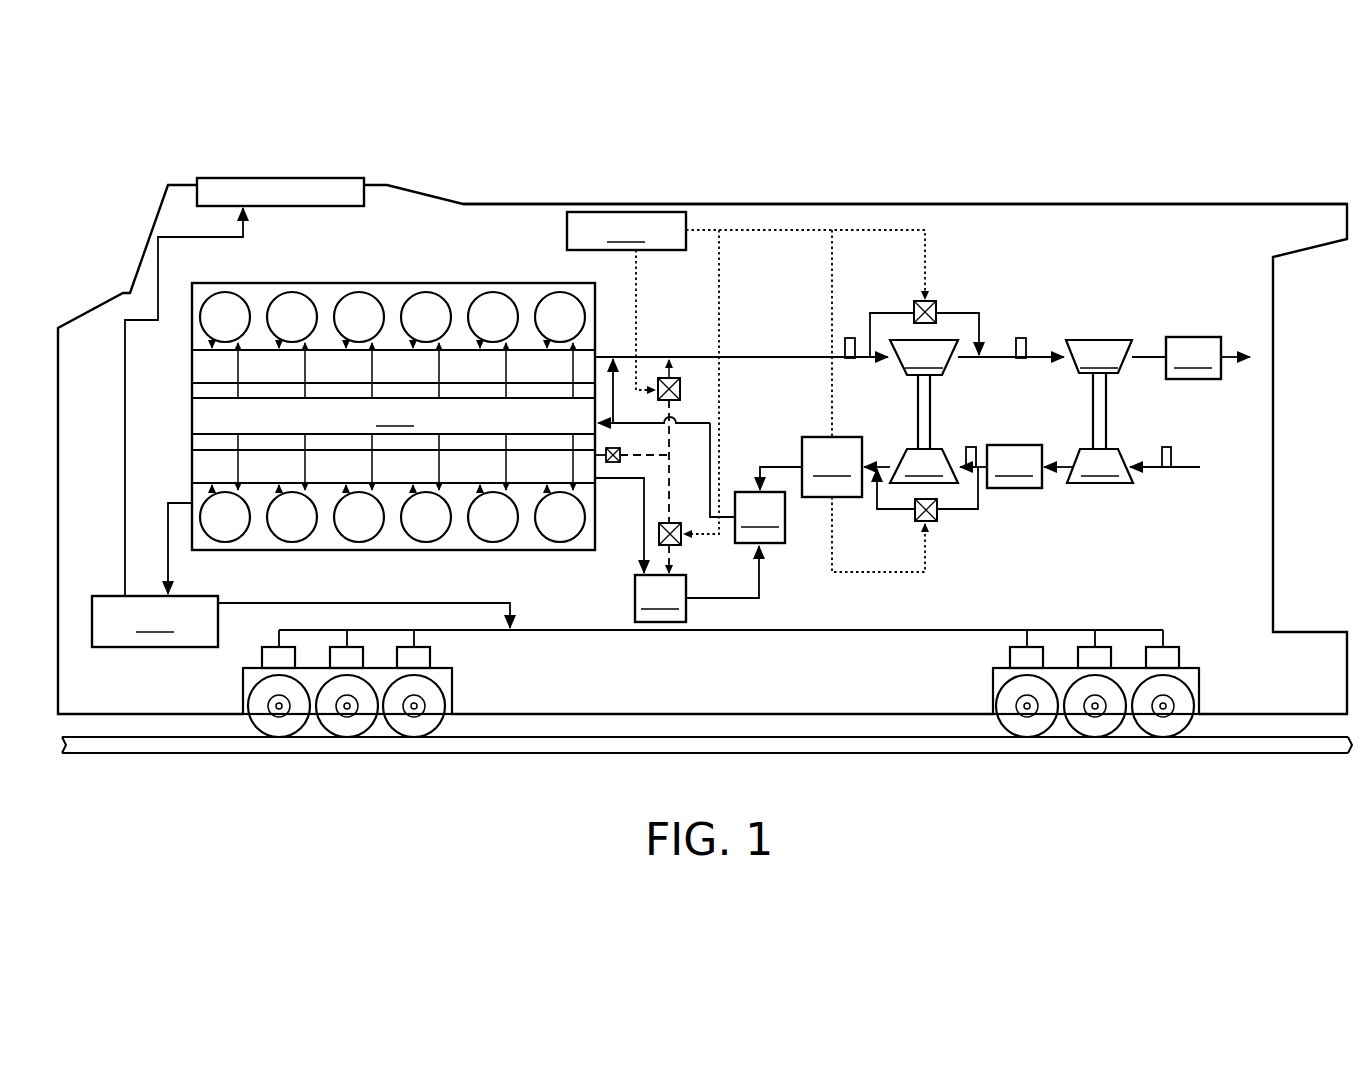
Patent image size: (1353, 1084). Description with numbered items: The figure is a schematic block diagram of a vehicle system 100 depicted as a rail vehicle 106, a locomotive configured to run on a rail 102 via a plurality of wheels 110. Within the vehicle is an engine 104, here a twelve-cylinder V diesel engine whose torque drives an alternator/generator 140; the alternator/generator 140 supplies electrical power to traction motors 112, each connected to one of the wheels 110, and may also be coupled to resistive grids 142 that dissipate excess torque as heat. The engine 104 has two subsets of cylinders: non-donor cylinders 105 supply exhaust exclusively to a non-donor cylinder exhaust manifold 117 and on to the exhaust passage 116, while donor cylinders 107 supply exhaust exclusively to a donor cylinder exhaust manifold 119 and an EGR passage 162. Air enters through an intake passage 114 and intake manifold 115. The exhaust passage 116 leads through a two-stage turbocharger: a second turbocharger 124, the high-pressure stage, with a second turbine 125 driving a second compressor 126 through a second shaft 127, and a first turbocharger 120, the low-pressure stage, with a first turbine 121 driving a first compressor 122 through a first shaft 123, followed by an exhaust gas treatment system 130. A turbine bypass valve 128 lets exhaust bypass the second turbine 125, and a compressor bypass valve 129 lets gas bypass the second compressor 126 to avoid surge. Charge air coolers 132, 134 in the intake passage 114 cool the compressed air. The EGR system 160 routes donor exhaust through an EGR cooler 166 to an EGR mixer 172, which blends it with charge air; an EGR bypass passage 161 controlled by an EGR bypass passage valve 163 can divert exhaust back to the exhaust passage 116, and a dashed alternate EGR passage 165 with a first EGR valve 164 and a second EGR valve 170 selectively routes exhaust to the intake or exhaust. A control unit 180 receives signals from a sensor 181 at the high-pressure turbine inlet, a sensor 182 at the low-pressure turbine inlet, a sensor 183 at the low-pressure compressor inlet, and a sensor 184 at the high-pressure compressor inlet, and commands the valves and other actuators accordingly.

The vehicle system 100 is at (1175, 178).
The rail 102 is at (1265, 755).
The engine 104 is at (488, 272).
The non-donor cylinders 105 is at (362, 292).
The rail vehicle 106 is at (1025, 203).
The donor cylinders 107 is at (360, 543).
The wheels 110 is at (438, 697).
The traction motors 112 is at (437, 663).
The intake passage 114 is at (715, 462).
The intake manifold 115 is at (393, 416).
The exhaust passage 116 is at (757, 357).
The non-donor cylinder exhaust manifold 117 is at (190, 365).
The donor cylinder exhaust manifold 119 is at (190, 467).
The first turbocharger 120 is at (1122, 441).
The first turbine 121 is at (1116, 356).
The first compressor 122 is at (1098, 502).
The first shaft 123 is at (1107, 430).
The second turbocharger 124 is at (957, 520).
The second turbine 125 is at (924, 357).
The second compressor 126 is at (938, 466).
The second shaft 127 is at (932, 428).
The turbine bypass valve 128 is at (938, 306).
The compressor bypass valve 129 is at (915, 518).
The exhaust gas treatment system 130 is at (1208, 358).
The charge air cooler 132 is at (1030, 466).
The charge air cooler 134 is at (846, 467).
The alternator/generator 140 is at (301, 575).
The resistive grids 142 is at (349, 178).
The EGR system 160 is at (782, 590).
The EGR bypass passage 161 is at (614, 383).
The EGR passage 162 is at (643, 500).
The EGR bypass passage valve 163 is at (618, 450).
The first EGR valve 164 is at (681, 389).
The alternate EGR passage 165 is at (672, 458).
The EGR cooler 166 is at (697, 584).
The second EGR valve 170 is at (682, 545).
The EGR mixer 172 is at (760, 517).
The control unit 180 is at (746, 392).
The sensor 181 is at (851, 338).
The sensor 182 is at (1021, 338).
The sensor 183 is at (1167, 447).
The sensor 184 is at (970, 447).